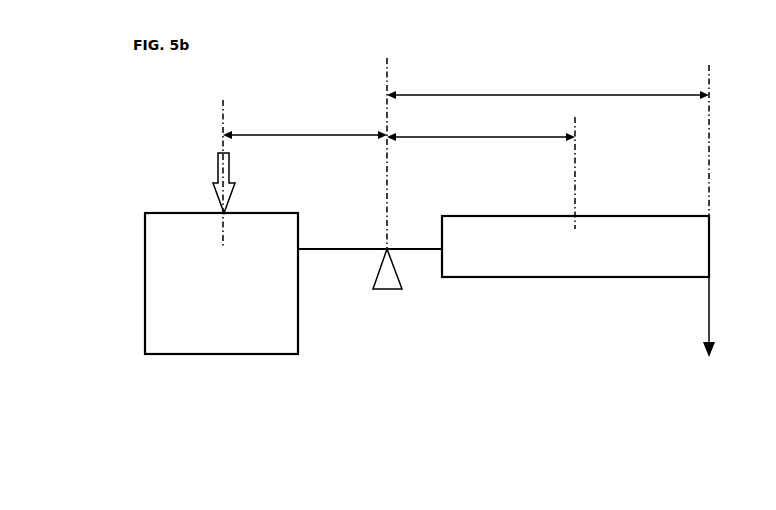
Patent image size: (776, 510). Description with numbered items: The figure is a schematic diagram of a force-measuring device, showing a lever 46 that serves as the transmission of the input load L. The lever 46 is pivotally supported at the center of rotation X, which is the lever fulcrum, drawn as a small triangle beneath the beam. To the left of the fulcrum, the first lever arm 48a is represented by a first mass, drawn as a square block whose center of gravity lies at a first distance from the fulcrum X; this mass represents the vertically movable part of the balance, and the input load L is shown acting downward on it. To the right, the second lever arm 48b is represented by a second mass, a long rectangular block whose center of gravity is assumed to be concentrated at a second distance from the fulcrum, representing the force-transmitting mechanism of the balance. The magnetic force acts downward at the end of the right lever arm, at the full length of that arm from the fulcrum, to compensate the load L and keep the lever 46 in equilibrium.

The lever 46 is at (333, 59).
The first lever arm 48a is at (282, 306).
The second lever arm 48b is at (514, 261).